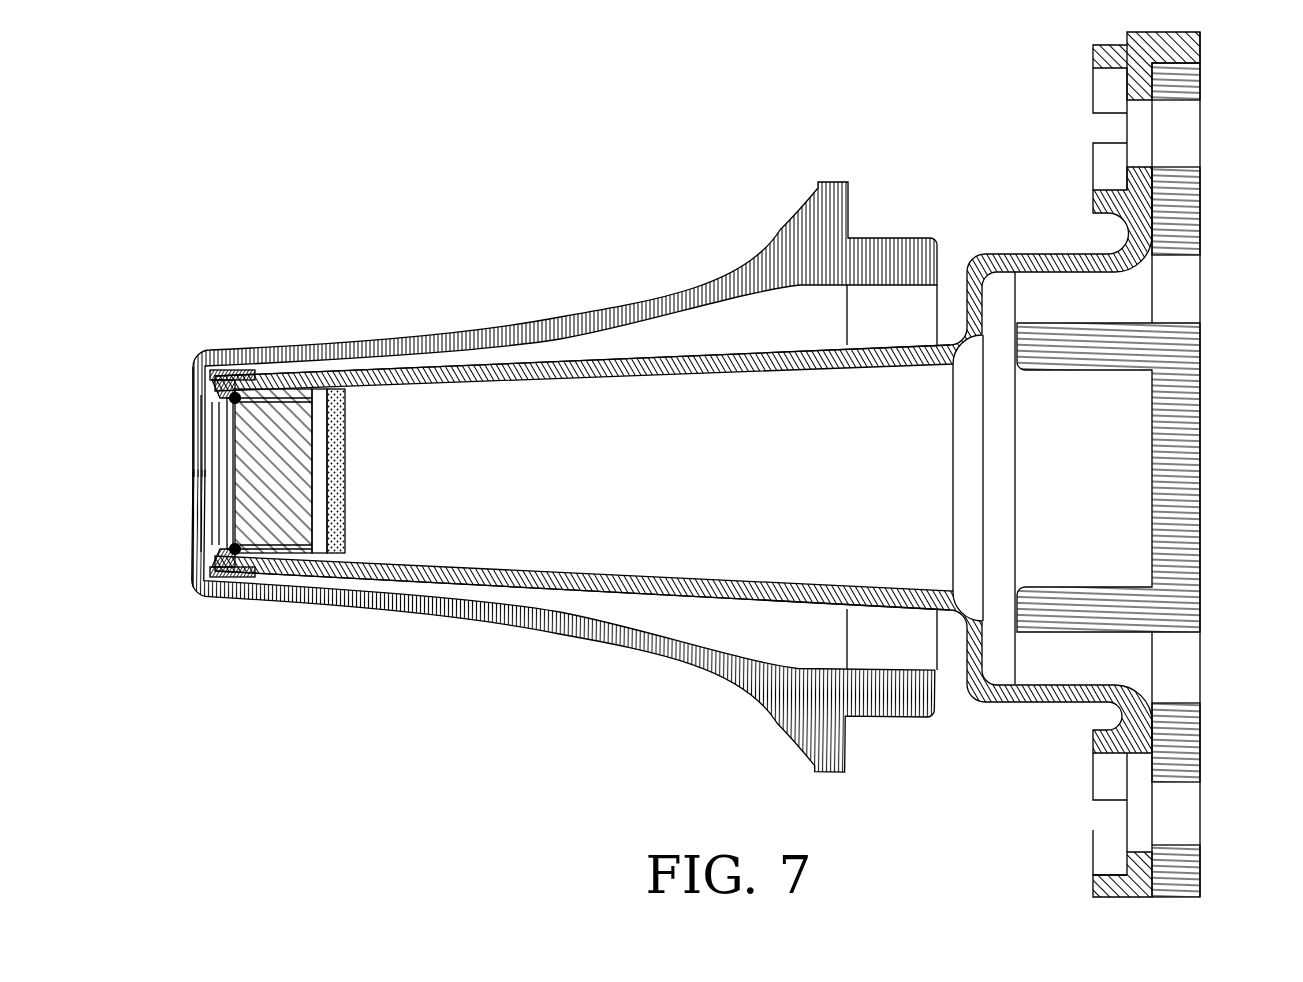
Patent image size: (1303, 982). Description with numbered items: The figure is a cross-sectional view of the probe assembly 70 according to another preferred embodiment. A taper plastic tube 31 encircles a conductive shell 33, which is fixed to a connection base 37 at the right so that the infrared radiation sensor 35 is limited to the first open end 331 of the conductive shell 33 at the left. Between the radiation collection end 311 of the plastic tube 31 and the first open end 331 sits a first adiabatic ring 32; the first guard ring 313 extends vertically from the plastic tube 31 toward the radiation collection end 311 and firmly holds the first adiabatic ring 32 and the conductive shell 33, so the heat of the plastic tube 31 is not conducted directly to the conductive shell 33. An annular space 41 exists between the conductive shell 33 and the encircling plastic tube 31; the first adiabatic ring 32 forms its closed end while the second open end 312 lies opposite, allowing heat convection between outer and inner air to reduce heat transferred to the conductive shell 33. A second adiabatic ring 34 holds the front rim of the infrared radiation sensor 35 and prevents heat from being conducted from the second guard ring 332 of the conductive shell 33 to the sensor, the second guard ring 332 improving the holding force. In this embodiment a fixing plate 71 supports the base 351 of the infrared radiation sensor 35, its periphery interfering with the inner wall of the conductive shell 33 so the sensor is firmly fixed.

The probe assembly 70 is at (340, 150).
The taper plastic tube 31 is at (478, 333).
The radiation collection end 311 is at (183, 393).
The second open end 312 is at (940, 262).
The first guard ring 313 is at (222, 372).
The first adiabatic ring 32 is at (253, 385).
The conductive shell 33 is at (545, 358).
The first open end 331 is at (208, 533).
The second guard ring 332 is at (210, 410).
The second adiabatic ring 34 is at (233, 393).
The infrared radiation sensor 35 is at (287, 435).
The base 351 is at (338, 432).
The connection base 37 is at (1182, 357).
The annular space 41 is at (600, 345).
The fixing plate 71 is at (336, 553).